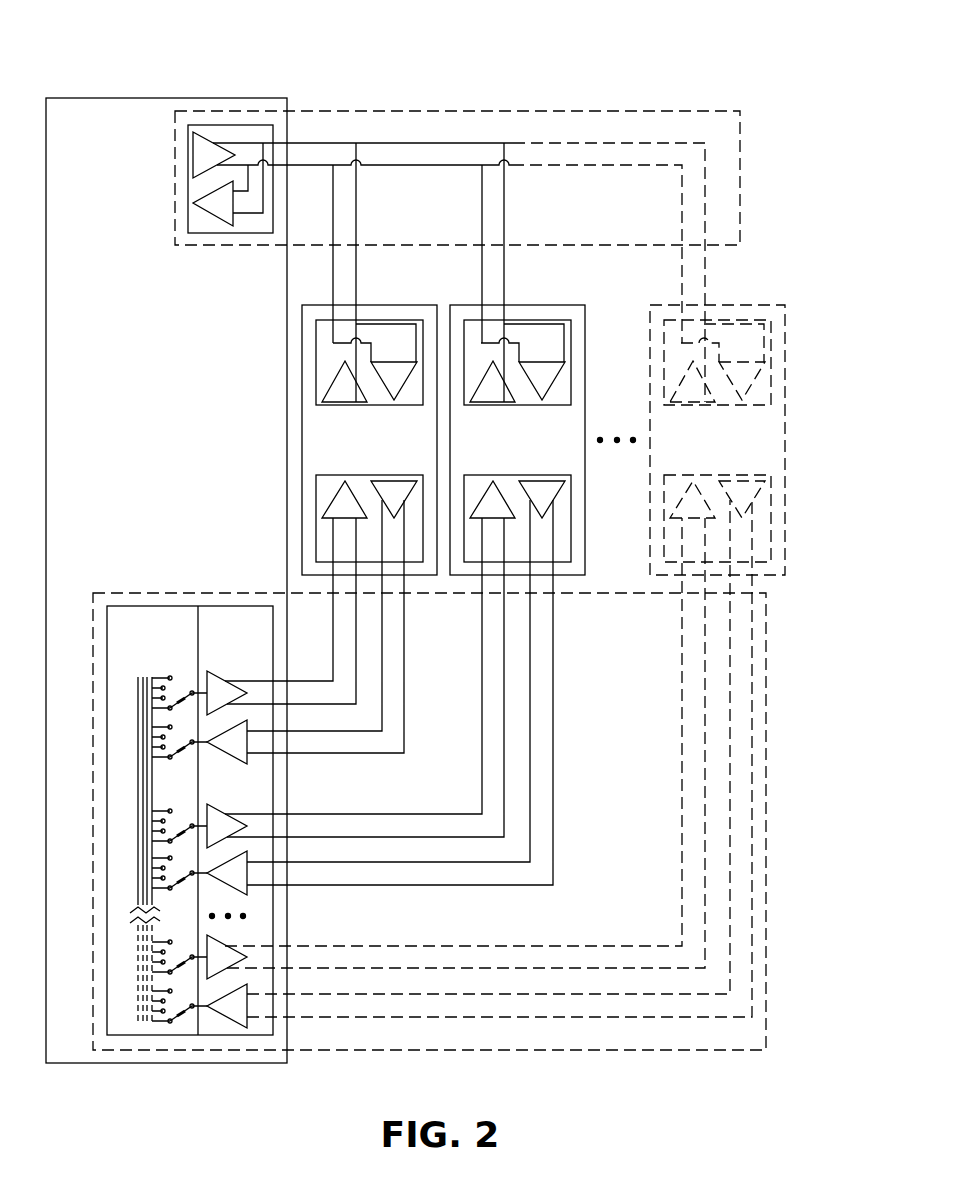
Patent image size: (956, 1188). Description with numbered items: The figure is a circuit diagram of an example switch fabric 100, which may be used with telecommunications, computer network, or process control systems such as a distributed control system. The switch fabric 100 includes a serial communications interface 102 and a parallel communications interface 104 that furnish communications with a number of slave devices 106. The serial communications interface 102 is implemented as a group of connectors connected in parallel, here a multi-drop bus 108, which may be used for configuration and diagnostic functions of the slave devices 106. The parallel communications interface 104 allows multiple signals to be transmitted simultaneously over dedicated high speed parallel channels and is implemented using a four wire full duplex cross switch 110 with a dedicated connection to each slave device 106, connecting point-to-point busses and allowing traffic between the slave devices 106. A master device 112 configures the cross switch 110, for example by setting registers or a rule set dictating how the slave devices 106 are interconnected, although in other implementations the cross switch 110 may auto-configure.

The switch fabric 100 is at (683, 37).
The serial communications interface 102 is at (744, 172).
The parallel communications interface 104 is at (764, 1053).
The slave device 106 is at (368, 305).
The multi-drop bus 108 is at (415, 143).
The cross switch 110 is at (150, 1035).
The master device 112 is at (187, 97).